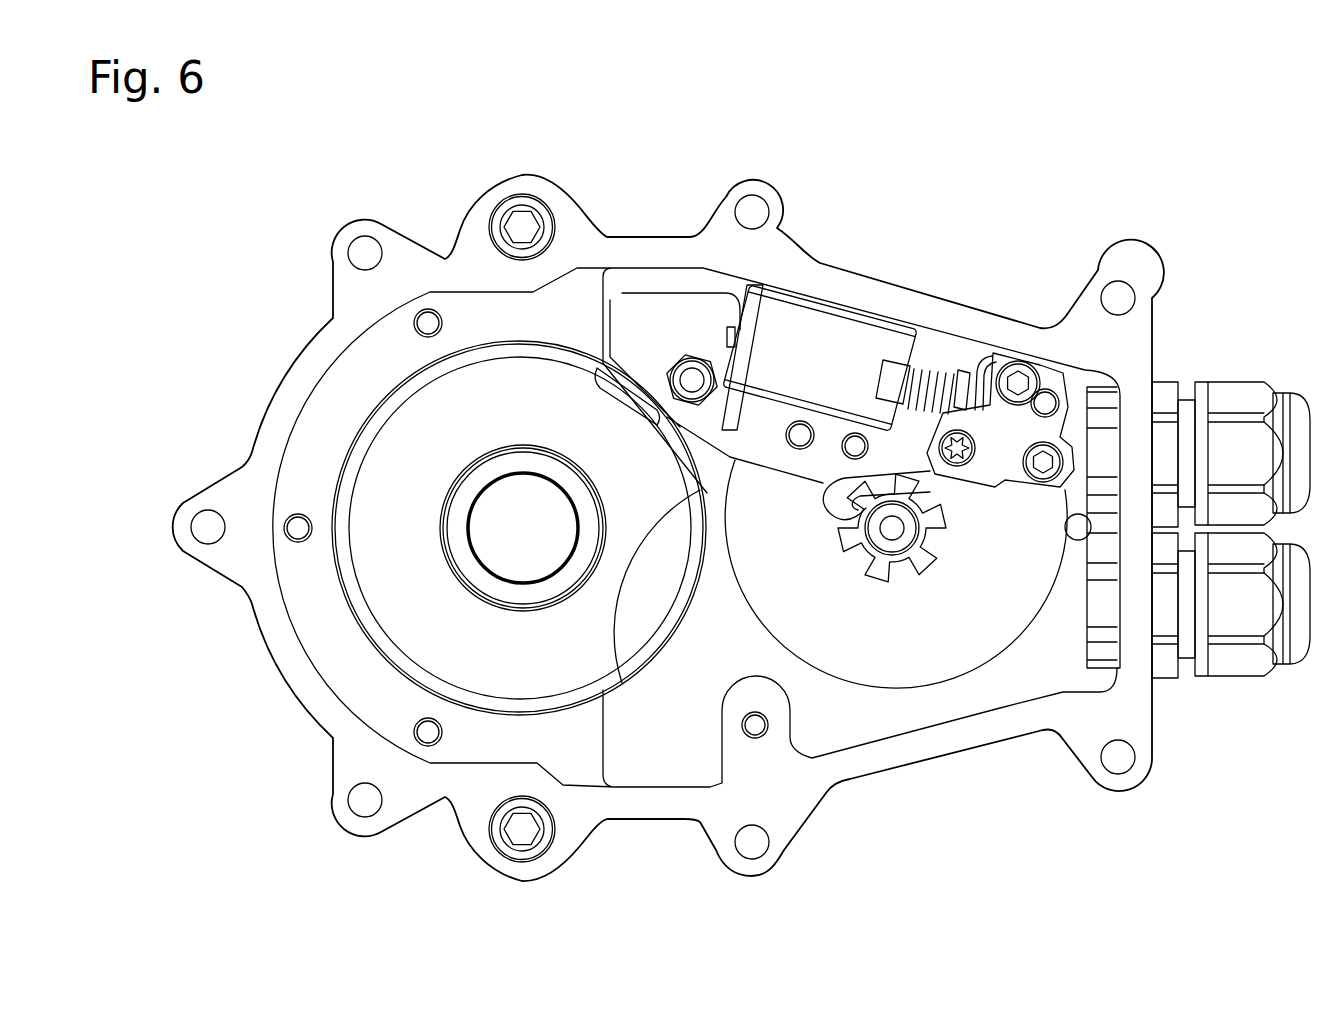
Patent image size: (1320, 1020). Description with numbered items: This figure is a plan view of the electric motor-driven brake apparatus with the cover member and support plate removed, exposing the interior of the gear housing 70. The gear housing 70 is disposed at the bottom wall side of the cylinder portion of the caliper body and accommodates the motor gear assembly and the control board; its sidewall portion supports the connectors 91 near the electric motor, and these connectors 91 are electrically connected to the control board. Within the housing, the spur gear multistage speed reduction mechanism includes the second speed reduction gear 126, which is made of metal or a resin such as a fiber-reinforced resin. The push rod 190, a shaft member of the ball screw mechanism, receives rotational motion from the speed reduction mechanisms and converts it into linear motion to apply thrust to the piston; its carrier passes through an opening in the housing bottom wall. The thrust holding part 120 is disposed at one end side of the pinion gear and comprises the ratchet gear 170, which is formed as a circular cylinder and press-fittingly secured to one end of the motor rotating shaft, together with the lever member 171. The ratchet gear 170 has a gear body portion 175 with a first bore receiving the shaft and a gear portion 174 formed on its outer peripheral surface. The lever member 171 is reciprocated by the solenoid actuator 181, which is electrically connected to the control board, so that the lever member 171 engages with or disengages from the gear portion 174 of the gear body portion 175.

The gear housing 70 is at (988, 744).
The connectors 91 is at (1233, 393).
The thrust holding part 120 is at (960, 364).
The second speed reduction gear 126 is at (408, 470).
The ratchet gear 170 is at (893, 588).
The lever member 171 is at (913, 450).
The gear portion 174 is at (920, 562).
The gear body portion 175 is at (866, 540).
The solenoid actuator 181 is at (870, 350).
The push rod 190 is at (515, 531).